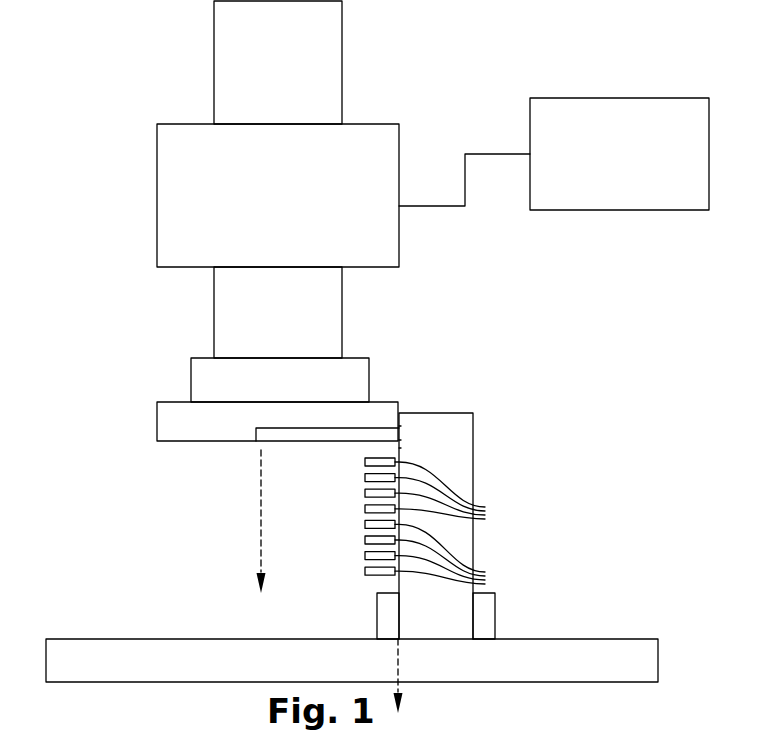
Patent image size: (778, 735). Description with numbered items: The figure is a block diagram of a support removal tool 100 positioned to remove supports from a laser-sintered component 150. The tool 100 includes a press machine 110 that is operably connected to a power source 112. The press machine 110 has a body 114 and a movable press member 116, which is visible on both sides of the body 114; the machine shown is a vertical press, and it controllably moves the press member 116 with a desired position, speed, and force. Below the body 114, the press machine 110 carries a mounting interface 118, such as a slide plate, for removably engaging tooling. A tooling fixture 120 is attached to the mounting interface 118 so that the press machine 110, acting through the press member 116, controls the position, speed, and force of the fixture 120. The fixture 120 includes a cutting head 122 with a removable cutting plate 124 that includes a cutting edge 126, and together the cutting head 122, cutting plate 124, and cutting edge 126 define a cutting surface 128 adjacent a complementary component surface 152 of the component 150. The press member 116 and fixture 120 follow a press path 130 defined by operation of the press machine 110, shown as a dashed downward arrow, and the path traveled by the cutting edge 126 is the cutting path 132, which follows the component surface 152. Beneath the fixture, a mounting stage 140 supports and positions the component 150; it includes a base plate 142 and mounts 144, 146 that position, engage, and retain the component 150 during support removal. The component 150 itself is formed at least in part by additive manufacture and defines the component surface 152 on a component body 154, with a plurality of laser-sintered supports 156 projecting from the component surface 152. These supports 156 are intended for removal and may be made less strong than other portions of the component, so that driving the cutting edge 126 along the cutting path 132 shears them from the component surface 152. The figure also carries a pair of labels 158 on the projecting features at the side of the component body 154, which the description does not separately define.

The support removal tool 100 is at (105, 102).
The press machine 110 is at (445, 62).
The power source 112 is at (575, 98).
The body 114 is at (399, 240).
The press member 116 is at (342, 61).
The mounting interface 118 is at (370, 375).
The tooling fixture 120 is at (135, 392).
The cutting head 122 is at (200, 441).
The cutting plate 124 is at (290, 441).
The cutting edge 126 is at (400, 440).
The cutting surface 128 is at (400, 426).
The press path 130 is at (261, 525).
The cutting path 132 is at (400, 648).
The mounting stage 140 is at (118, 605).
The base plate 142 is at (120, 683).
The mount 144 is at (377, 613).
The mount 146 is at (495, 615).
The laser-sintered component 150 is at (538, 485).
The component surface 152 is at (400, 448).
The component body 154 is at (473, 478).
The laser-sintered supports 156 is at (360, 455).
The wires 158 is at (461, 523).